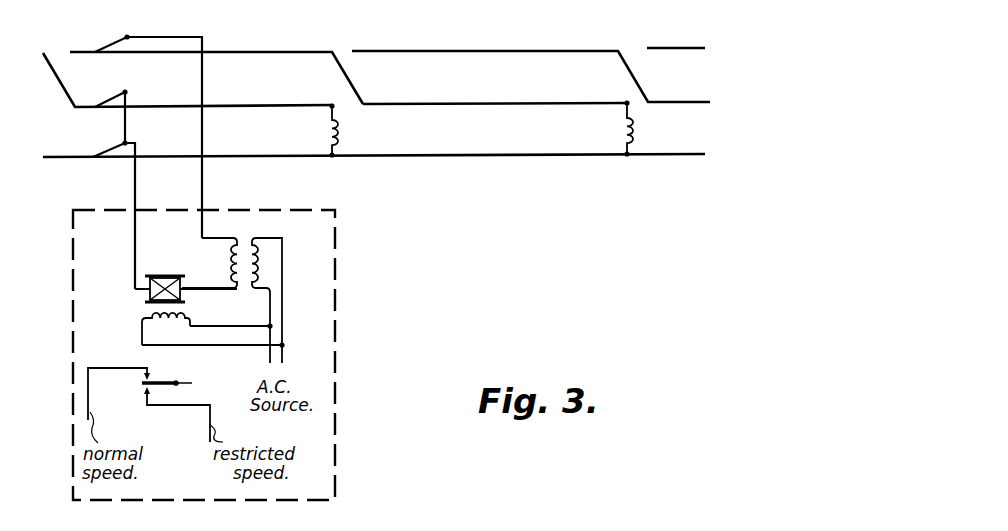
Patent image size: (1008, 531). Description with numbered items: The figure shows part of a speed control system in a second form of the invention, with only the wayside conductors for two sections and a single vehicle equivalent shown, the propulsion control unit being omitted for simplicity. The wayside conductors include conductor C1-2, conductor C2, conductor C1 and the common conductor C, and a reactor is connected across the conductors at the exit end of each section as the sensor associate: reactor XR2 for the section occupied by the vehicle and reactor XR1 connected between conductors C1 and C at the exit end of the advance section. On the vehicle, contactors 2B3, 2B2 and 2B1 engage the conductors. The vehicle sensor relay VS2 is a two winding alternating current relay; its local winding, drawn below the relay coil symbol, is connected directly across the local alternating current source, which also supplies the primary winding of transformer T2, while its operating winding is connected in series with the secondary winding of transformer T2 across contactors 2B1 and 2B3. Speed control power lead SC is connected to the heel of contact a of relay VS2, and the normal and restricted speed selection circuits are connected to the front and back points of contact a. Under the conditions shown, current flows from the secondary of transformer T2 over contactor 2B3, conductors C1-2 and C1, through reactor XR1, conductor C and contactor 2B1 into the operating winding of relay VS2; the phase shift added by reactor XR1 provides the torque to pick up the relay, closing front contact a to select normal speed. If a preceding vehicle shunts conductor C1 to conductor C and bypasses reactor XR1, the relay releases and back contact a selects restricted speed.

The contactor 2B3 is at (103, 29).
The contactor 2B2 is at (110, 86).
The contactor 2B1 is at (112, 154).
The wayside conductor C1-2 is at (303, 52).
The wayside conductor C2 is at (307, 104).
The wayside conductor C1 is at (580, 103).
The common conductor C is at (307, 156).
The reactor XR2 is at (340, 132).
The reactor XR1 is at (635, 130).
The transformer T2 is at (232, 280).
The vehicle sensor relay VS2 is at (186, 297).
The speed control power lead SC is at (190, 384).
The contact a is at (173, 380).